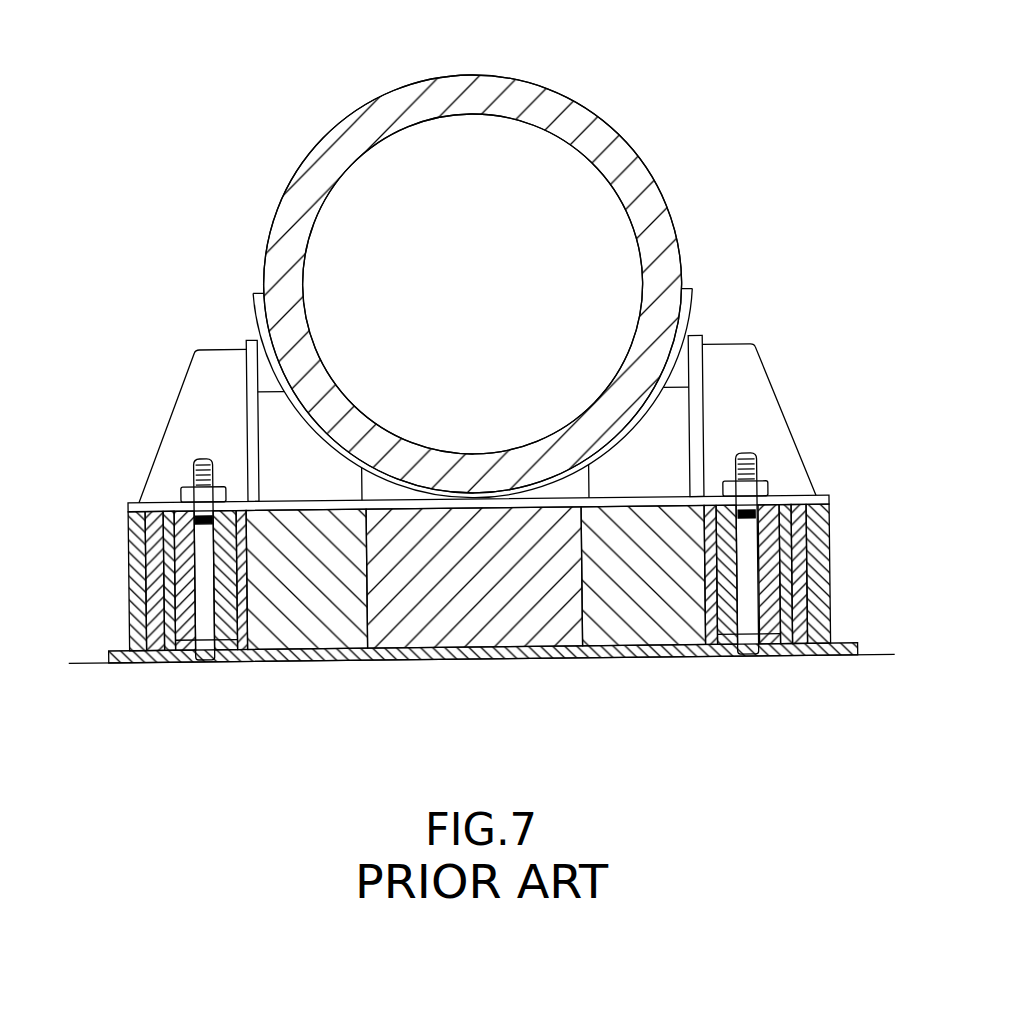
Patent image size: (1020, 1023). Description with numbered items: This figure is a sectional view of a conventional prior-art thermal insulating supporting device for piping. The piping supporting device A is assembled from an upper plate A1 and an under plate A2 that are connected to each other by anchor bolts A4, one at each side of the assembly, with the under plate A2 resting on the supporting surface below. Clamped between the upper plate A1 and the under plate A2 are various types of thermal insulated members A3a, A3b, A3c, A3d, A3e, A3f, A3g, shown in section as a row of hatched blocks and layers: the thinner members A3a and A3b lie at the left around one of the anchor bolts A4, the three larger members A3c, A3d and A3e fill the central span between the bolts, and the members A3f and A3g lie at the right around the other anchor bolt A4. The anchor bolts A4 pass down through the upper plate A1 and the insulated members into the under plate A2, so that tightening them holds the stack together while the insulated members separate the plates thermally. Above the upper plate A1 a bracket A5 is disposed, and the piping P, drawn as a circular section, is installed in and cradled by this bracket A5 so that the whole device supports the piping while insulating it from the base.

The piping P is at (568, 93).
The piping supporting device A is at (158, 320).
The bracket A5 is at (707, 323).
The upper plate A1 is at (125, 503).
The under plate A2 is at (108, 652).
The thermal insulated member A3a is at (137, 575).
The thermal insulated member A3b is at (180, 517).
The thermal insulated member A3c is at (307, 618).
The thermal insulated member A3d is at (482, 627).
The thermal insulated member A3e is at (651, 622).
The thermal insulated member A3f is at (770, 507).
The thermal insulated member A3g is at (823, 573).
The anchor bolt A4 is at (205, 643).